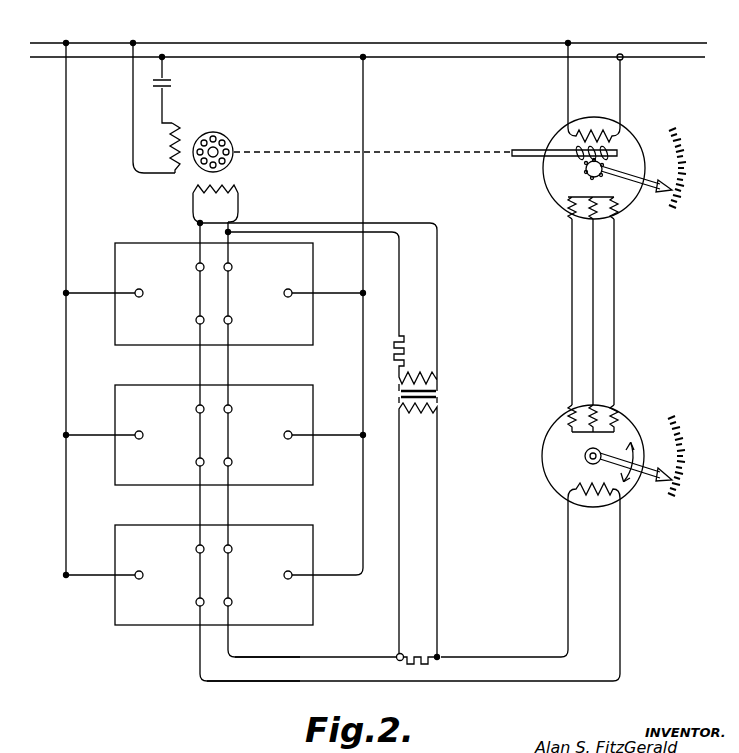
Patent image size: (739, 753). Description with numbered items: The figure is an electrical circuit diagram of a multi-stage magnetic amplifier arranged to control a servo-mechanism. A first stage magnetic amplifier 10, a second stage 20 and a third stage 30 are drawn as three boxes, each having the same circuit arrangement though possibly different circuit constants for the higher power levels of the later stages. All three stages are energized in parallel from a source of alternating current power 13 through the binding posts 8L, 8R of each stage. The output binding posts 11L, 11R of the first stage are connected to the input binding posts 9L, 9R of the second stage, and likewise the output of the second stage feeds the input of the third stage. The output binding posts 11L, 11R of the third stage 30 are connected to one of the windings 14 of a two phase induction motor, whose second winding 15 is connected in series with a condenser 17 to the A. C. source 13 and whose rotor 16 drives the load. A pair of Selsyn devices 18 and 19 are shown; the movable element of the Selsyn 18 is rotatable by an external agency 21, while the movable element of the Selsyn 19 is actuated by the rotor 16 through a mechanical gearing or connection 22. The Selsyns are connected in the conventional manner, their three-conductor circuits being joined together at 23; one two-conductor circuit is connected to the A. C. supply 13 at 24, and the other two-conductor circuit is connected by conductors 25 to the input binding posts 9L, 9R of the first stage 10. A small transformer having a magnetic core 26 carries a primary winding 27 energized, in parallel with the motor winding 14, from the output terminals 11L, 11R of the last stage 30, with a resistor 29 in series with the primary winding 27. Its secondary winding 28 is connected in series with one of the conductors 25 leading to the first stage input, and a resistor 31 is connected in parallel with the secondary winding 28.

The source of alternating current power 13 is at (356, 48).
The condenser 17 is at (175, 90).
The second winding 15 is at (161, 148).
The rotor 16 is at (352, 149).
The motor winding 14 is at (227, 203).
The third stage 30 is at (214, 294).
The second stage 20 is at (214, 435).
The first stage magnetic amplifier 10 is at (214, 575).
The output binding post 11L is at (185, 408).
The output binding post 11R is at (244, 408).
The binding post 8L is at (149, 434).
The binding post 8R is at (275, 434).
The input binding post 9L is at (187, 461).
The input binding post 9R is at (239, 461).
The resistor 29 is at (386, 351).
The primary winding 27 is at (418, 372).
The magnetic core 26 is at (431, 396).
The secondary winding 28 is at (418, 414).
The resistor 31 is at (418, 650).
The conductors 25 is at (298, 667).
The two-conductor circuit connection 24 is at (576, 85).
The Selsyn device 19 is at (599, 164).
The mechanical gearing 22 is at (584, 163).
The three-conductor circuit connection 23 is at (614, 307).
The Selsyn device 18 is at (632, 427).
The external agency 21 is at (626, 485).